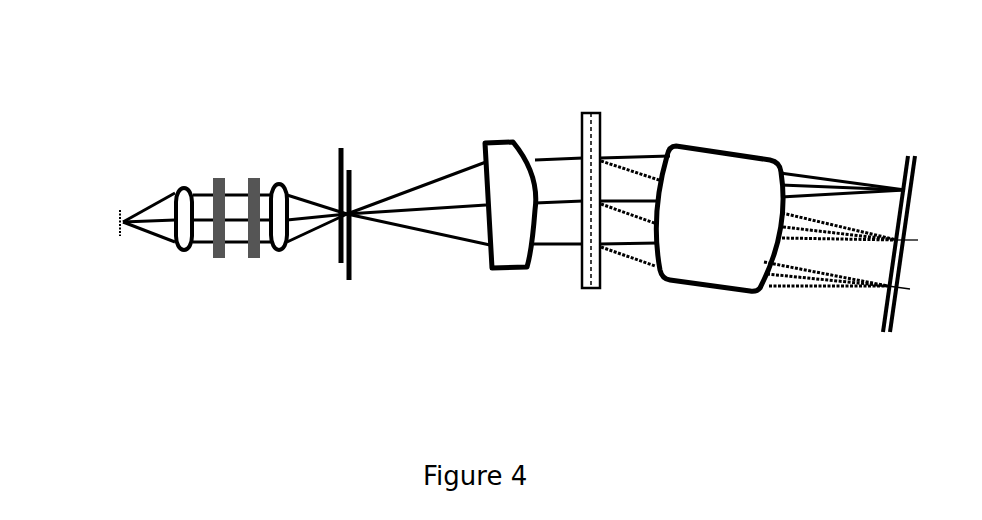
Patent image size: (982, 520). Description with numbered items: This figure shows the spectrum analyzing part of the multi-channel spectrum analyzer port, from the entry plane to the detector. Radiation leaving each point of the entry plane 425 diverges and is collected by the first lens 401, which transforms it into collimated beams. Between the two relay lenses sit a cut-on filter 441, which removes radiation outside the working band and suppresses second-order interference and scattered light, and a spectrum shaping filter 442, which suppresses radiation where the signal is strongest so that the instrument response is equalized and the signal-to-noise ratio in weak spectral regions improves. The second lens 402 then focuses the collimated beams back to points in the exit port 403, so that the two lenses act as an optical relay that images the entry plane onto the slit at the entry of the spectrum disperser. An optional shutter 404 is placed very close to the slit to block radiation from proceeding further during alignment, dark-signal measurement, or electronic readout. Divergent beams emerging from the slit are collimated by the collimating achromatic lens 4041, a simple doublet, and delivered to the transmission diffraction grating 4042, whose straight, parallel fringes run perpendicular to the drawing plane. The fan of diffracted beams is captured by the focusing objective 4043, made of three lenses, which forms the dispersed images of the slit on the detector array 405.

The entry plane 425 is at (76, 229).
The first lens 401 is at (181, 297).
The cut-on filter 441 is at (207, 141).
The spectrum shaping filter 442 is at (257, 140).
The second lens 402 is at (285, 290).
The exit port 403 is at (354, 324).
The shutter 404 is at (350, 110).
The collimating achromatic lens 4041 is at (500, 153).
The transmission diffraction grating 4042 is at (598, 252).
The focusing objective 4043 is at (719, 165).
The detector array 405 is at (883, 274).